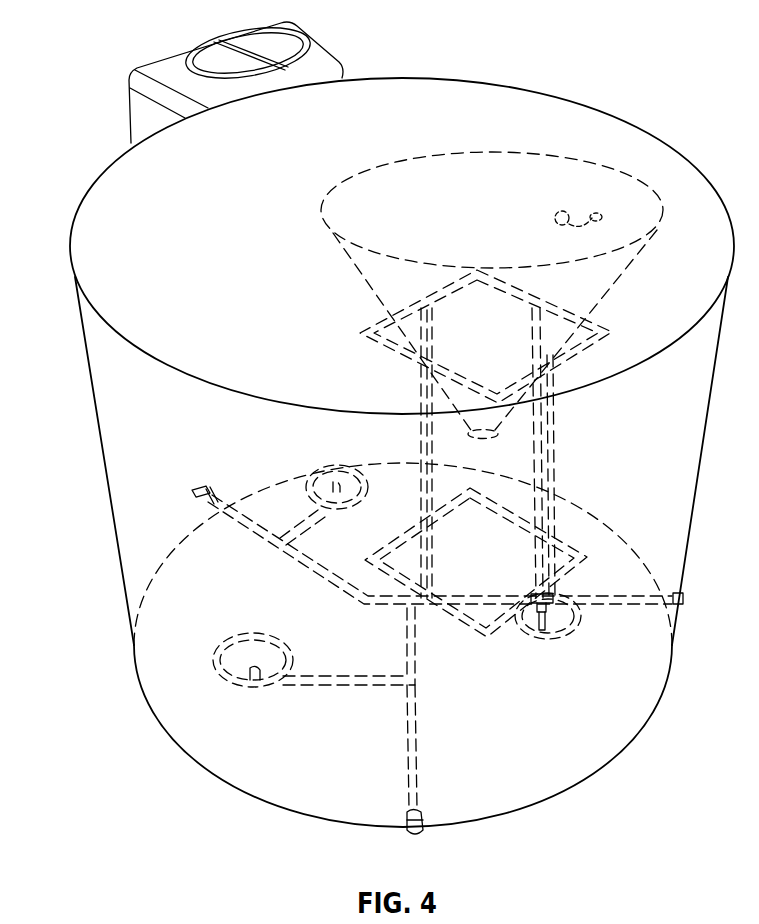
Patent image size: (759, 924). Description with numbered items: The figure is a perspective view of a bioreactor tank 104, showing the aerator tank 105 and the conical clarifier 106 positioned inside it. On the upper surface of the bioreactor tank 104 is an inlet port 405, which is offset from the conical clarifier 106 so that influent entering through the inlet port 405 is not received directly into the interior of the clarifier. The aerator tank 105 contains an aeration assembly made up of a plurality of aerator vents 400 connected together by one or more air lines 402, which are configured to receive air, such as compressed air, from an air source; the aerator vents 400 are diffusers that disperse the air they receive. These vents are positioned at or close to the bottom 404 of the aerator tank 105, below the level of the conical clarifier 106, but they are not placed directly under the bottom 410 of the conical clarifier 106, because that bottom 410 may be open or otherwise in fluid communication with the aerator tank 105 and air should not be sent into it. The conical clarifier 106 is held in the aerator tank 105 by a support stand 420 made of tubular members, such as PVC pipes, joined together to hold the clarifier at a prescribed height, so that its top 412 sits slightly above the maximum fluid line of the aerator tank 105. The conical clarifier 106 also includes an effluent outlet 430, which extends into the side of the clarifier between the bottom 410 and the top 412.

The bioreactor tank 104 is at (623, 118).
The aerator tank 105 is at (97, 218).
The conical clarifier 106 is at (376, 288).
The aerator vents 400 is at (257, 692).
The air lines 402 is at (417, 745).
The bottom 404 is at (255, 802).
The inlet port 405 is at (283, 53).
The bottom 410 is at (485, 437).
The top 412 is at (500, 268).
The support stand 420 is at (548, 450).
The effluent outlet 430 is at (557, 210).